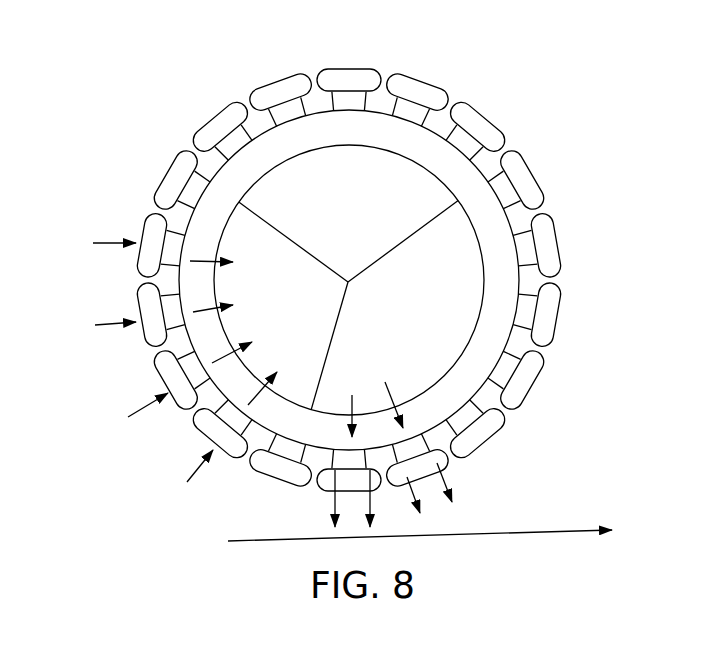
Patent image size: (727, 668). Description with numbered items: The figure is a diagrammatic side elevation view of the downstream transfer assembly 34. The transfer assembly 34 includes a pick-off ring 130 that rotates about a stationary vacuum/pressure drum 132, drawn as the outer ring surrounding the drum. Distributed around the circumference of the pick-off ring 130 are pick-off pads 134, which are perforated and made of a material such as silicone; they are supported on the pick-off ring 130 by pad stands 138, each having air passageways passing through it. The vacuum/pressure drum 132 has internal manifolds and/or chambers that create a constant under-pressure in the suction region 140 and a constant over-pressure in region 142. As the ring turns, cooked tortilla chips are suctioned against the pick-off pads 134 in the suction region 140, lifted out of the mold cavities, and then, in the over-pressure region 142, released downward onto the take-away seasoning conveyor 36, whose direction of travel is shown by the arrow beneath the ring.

The downstream transfer assembly 34 is at (130, 118).
The take-away seasoning conveyor 36 is at (527, 531).
The pick-off ring 130 is at (427, 147).
The vacuum/pressure drum 132 is at (487, 183).
The pick-off pads 134 is at (343, 82).
The pad stands 138 is at (352, 100).
The suction region 140 is at (300, 310).
The over-pressure region 142 is at (366, 370).